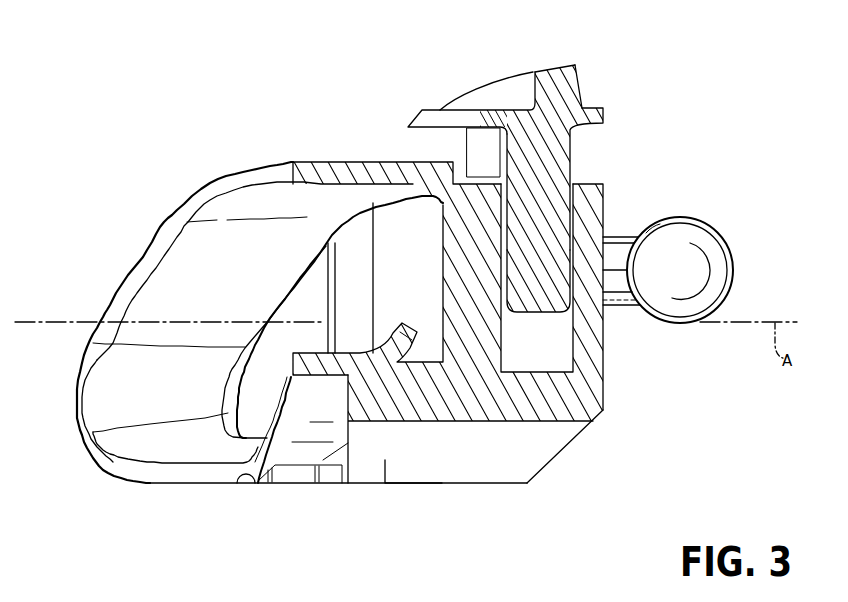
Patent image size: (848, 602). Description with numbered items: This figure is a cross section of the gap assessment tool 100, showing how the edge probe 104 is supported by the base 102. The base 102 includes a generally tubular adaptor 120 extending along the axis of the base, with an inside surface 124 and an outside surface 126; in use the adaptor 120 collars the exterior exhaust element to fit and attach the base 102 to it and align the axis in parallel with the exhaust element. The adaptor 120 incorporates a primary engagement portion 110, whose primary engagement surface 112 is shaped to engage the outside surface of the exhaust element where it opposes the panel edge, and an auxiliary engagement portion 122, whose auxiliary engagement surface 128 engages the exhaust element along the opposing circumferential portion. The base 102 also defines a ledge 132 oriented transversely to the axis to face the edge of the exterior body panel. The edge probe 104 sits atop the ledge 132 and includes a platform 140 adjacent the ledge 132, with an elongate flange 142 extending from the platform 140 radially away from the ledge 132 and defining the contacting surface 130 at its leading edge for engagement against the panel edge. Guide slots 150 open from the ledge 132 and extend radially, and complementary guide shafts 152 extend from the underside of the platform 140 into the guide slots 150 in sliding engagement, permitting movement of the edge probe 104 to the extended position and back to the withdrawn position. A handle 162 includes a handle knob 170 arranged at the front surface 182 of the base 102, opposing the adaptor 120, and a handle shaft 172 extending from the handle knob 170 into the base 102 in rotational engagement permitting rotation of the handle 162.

The gap assessment tool 100 is at (226, 485).
The base 102 is at (505, 484).
The edge probe 104 is at (533, 72).
The primary engagement portion 110 is at (197, 203).
The primary engagement surface 112 is at (311, 218).
The adaptor 120 is at (218, 313).
The auxiliary engagement portion 122 is at (152, 484).
The inside surface 124 is at (268, 329).
The outside surface 126 is at (165, 225).
The auxiliary engagement surface 128 is at (191, 453).
The contacting surface 130 is at (563, 63).
The ledge 132 is at (586, 183).
The platform 140 is at (605, 118).
The elongate flange 142 is at (583, 90).
The guide slots 150 is at (573, 336).
The guide shafts 152 is at (570, 276).
The handle 162 is at (710, 248).
The handle knob 170 is at (716, 229).
The handle shaft 172 is at (620, 237).
The front surface 182 is at (605, 402).